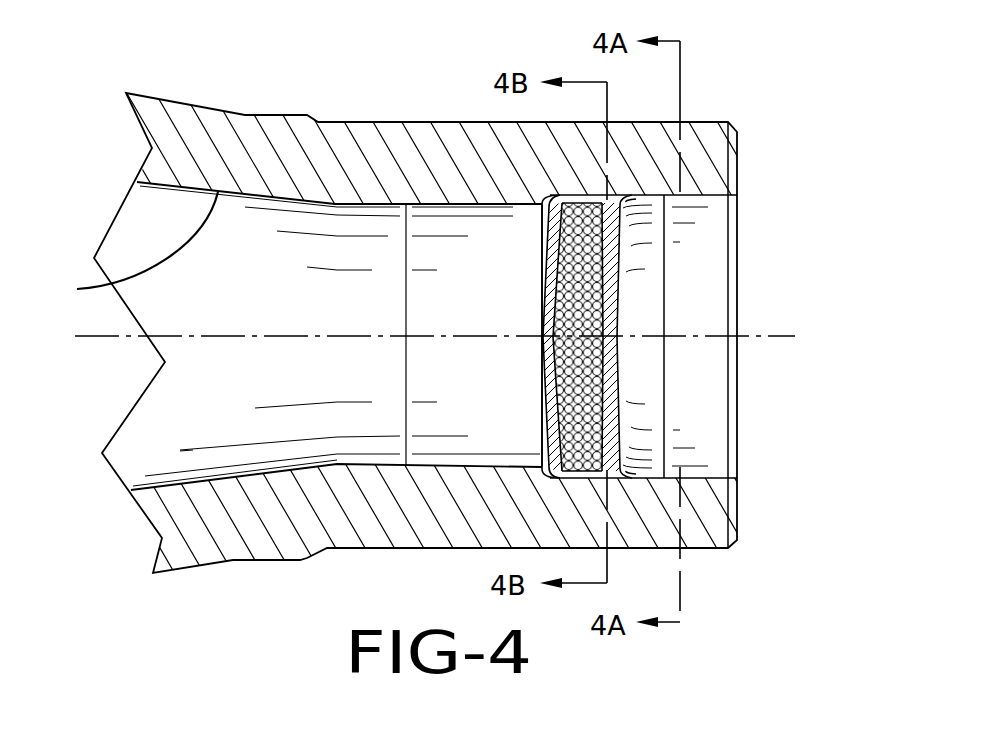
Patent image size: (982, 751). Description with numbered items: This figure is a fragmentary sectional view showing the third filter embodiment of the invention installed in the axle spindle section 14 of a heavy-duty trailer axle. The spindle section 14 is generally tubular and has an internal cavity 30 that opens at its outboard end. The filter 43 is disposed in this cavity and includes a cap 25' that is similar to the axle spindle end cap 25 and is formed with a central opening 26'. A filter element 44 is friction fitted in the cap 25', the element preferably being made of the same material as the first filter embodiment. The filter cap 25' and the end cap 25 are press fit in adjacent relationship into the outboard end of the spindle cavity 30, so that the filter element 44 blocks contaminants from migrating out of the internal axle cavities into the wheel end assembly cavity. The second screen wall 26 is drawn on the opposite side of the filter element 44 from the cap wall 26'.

The axle spindle section 14 is at (255, 138).
The internal cavity of axle spindle section 30 is at (128, 249).
The axle spindle end cap 25 is at (723, 336).
The cap 25' is at (531, 337).
The second screen 26 is at (706, 337).
The central opening 26' is at (485, 336).
The filter 43 is at (538, 292).
The filter element 44 is at (575, 397).